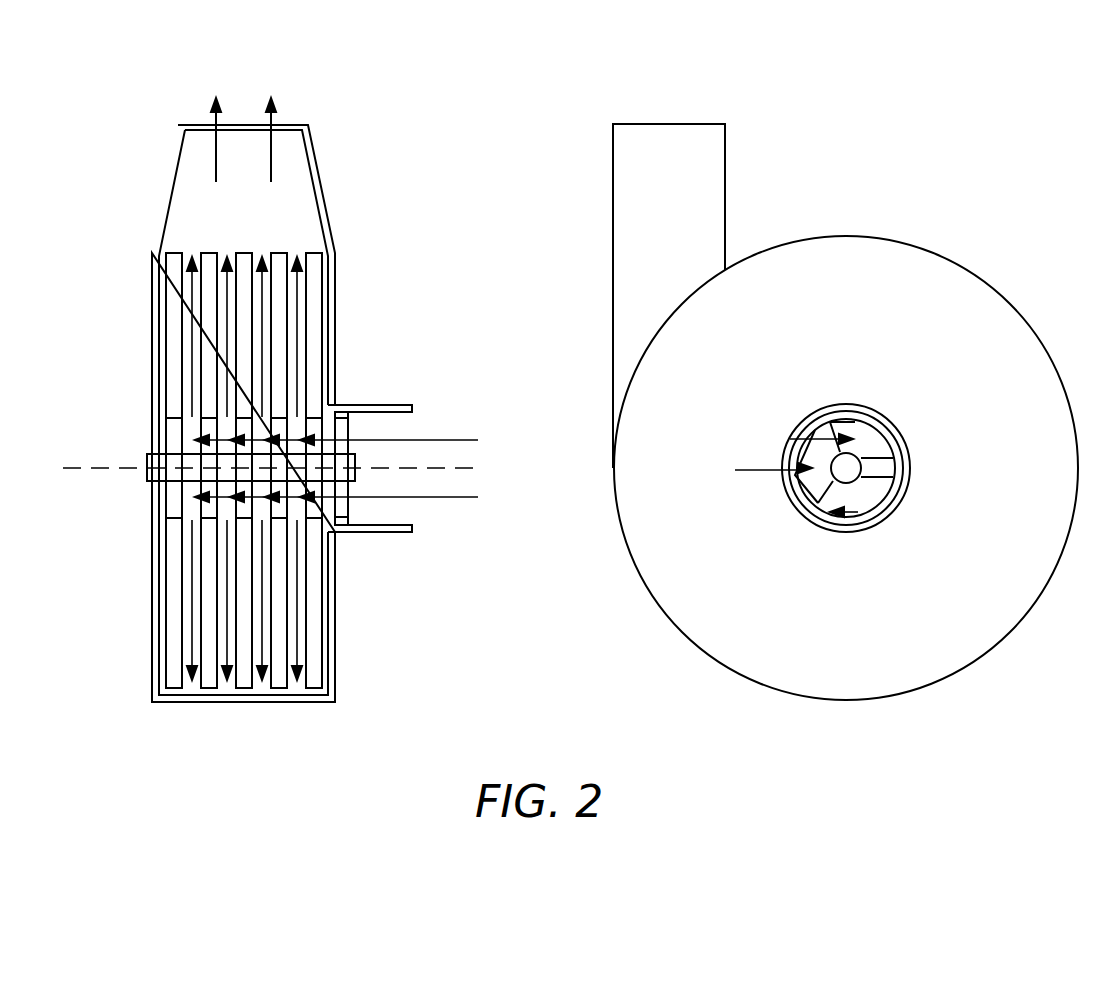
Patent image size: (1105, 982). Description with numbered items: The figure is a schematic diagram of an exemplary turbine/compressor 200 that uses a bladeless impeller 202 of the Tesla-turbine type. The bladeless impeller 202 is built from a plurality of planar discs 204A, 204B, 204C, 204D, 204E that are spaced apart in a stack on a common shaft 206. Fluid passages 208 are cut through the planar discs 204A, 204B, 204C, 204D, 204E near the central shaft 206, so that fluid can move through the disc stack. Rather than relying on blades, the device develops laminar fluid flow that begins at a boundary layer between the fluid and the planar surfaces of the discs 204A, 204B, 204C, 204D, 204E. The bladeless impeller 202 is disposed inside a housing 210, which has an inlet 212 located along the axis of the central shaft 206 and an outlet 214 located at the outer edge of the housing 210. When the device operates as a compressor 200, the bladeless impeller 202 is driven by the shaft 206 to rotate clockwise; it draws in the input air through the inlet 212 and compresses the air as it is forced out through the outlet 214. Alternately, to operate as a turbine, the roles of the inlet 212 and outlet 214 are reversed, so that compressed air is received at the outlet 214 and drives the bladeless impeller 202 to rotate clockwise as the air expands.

The turbine/compressor 200 is at (942, 172).
The bladeless impeller 202 is at (226, 226).
The planar disc 204A is at (315, 275).
The planar disc 204B is at (278, 302).
The planar disc 204C is at (243, 337).
The planar disc 204D is at (207, 325).
The planar disc 204E is at (173, 390).
The common shaft 206 is at (150, 455).
The fluid passages 208 is at (290, 416).
The housing 210 is at (157, 230).
The inlet 212 is at (500, 497).
The outlet 214 is at (305, 90).